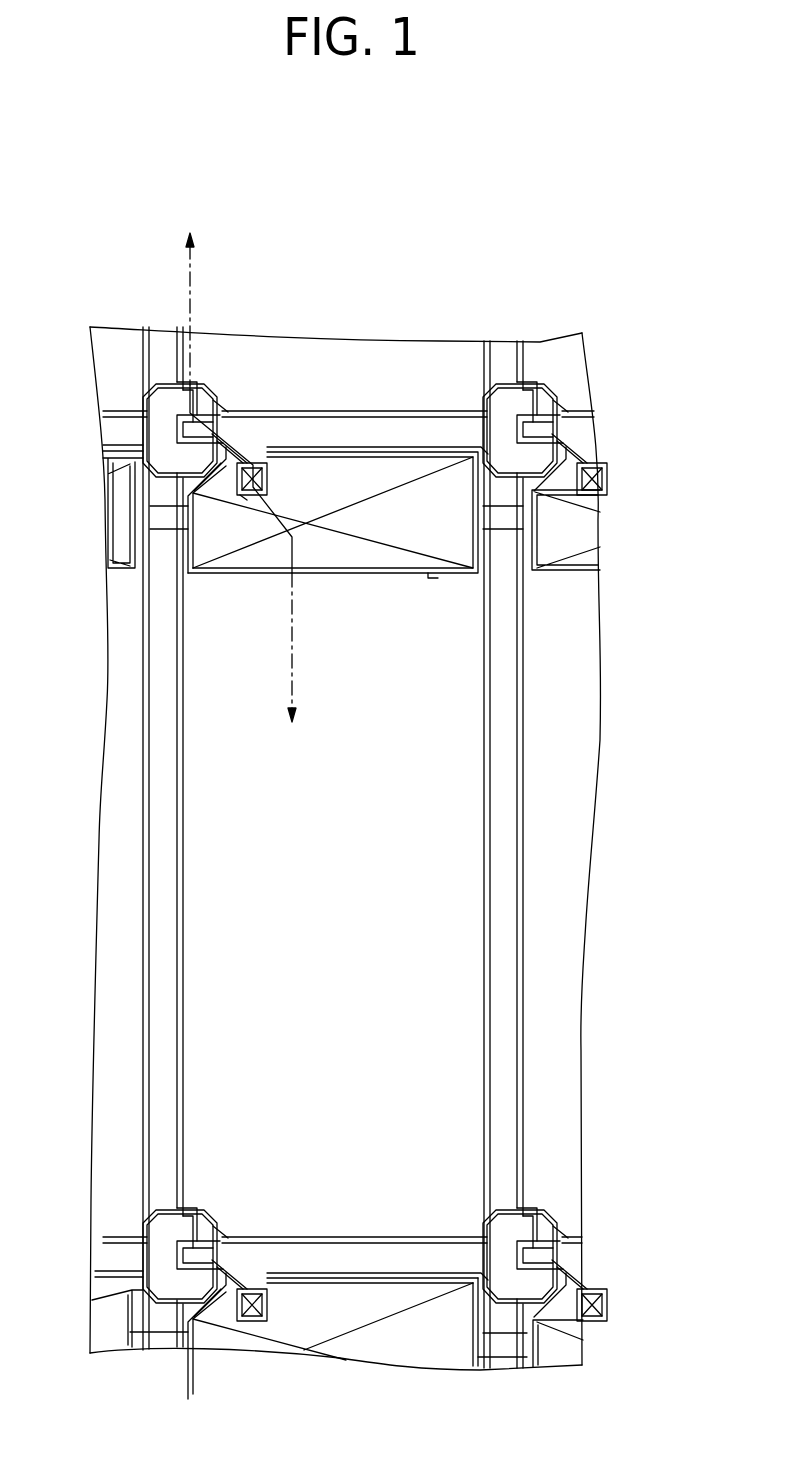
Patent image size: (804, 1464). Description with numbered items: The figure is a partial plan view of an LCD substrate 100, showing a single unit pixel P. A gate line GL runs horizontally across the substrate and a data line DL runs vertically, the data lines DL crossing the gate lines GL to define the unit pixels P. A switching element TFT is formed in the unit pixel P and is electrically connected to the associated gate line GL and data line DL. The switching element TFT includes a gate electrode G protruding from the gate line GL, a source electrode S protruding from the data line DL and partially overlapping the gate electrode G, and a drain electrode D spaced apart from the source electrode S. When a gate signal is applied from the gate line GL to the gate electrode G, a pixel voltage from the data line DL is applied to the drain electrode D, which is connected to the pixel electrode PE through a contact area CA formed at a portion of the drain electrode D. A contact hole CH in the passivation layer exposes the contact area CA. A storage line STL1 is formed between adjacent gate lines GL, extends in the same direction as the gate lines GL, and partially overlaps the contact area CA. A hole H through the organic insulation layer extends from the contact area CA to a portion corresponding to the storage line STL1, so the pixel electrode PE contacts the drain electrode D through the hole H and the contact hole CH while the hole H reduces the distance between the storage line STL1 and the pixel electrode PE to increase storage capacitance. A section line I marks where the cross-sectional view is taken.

The LCD substrate 100 is at (347, 168).
The switching element TFT is at (345, 266).
The source electrode S is at (198, 382).
The gate electrode G is at (222, 410).
The drain electrode D is at (240, 428).
The contact area CA is at (270, 466).
The contact hole CH is at (247, 500).
The gate line GL is at (590, 430).
The storage line STL1 is at (590, 546).
The hole H is at (433, 580).
The data line DL is at (507, 659).
The pixel electrode PE is at (485, 705).
The unit pixel P is at (337, 846).
The section line I-I' I is at (241, 479).